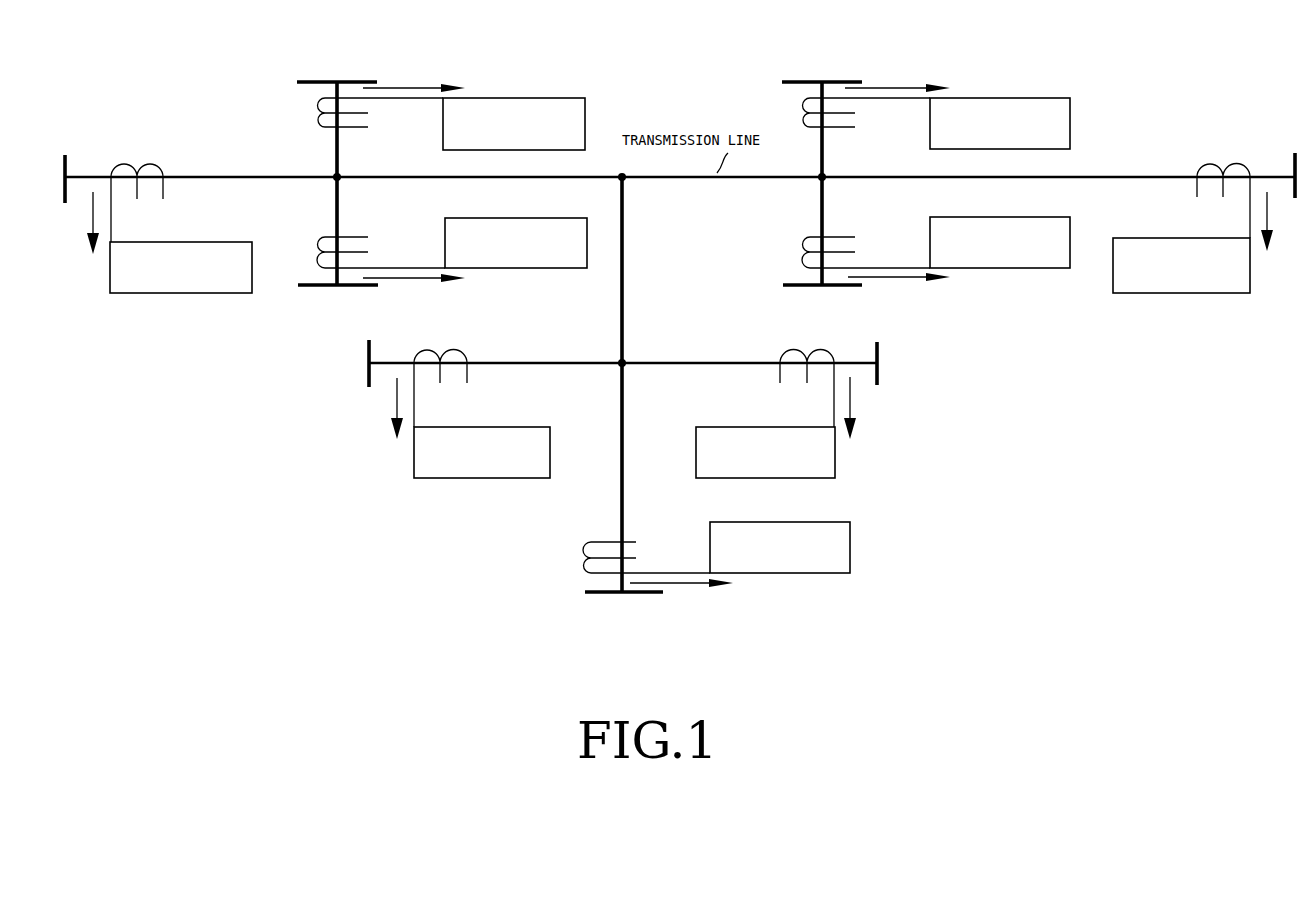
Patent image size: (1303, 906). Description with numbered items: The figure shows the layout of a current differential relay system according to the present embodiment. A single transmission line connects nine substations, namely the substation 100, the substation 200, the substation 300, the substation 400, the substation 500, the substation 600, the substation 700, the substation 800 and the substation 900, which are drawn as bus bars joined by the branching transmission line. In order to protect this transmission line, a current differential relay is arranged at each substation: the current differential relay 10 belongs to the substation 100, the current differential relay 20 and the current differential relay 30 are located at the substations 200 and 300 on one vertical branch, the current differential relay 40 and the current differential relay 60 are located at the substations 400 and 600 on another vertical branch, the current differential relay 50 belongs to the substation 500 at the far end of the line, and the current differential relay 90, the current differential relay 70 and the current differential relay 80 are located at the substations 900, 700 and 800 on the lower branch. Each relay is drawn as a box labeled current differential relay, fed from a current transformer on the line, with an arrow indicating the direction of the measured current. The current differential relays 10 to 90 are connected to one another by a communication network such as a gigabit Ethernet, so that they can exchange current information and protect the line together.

The current differential relay 10 is at (173, 293).
The current differential relay 20 is at (585, 110).
The current differential relay 30 is at (520, 268).
The current differential relay 40 is at (1070, 105).
The current differential relay 50 is at (1195, 293).
The current differential relay 60 is at (1010, 268).
The current differential relay 70 is at (835, 458).
The current differential relay 80 is at (850, 547).
The current differential relay 90 is at (480, 478).
The substation 100 is at (63, 156).
The substation 200 is at (327, 81).
The substation 300 is at (320, 287).
The substation 400 is at (807, 81).
The substation 500 is at (1295, 155).
The substation 600 is at (803, 287).
The substation 700 is at (883, 370).
The substation 800 is at (600, 594).
The substation 900 is at (368, 372).